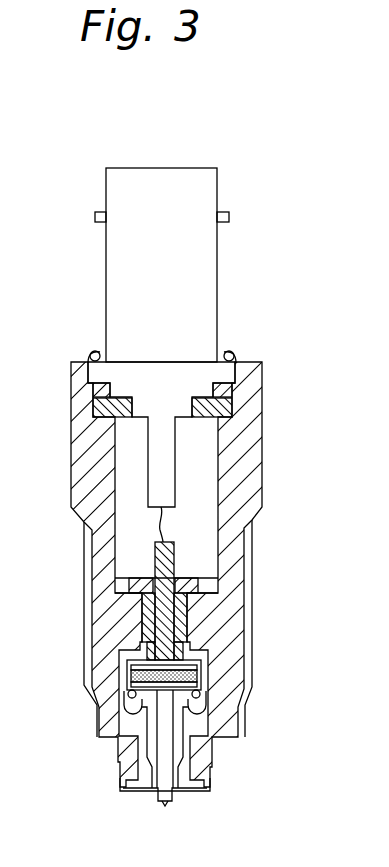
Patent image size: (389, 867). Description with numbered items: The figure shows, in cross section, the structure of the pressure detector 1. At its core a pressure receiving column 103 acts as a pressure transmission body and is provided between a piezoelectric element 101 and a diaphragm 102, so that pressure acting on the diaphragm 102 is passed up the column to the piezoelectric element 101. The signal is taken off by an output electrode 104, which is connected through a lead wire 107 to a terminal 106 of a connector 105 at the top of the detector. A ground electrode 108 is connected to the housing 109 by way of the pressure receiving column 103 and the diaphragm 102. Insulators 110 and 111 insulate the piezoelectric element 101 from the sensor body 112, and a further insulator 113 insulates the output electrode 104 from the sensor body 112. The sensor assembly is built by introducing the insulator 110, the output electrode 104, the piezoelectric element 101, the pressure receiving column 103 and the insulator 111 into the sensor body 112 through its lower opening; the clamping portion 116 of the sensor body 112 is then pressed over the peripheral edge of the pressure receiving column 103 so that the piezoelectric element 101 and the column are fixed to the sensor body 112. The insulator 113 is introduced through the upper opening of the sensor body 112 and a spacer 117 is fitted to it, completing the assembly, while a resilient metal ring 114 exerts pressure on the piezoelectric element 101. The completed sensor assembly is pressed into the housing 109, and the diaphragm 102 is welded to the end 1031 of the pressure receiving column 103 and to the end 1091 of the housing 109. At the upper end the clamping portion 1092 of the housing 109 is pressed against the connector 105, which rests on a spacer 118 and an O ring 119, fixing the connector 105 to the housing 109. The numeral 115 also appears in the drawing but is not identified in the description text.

The pressure detector 1 is at (231, 254).
The piezoelectric element 101 is at (200, 679).
The diaphragm 102 is at (120, 793).
The pressure receiving column 103 is at (190, 768).
The output electrode 104 is at (160, 630).
The connector 105 is at (217, 322).
The terminal 106 is at (157, 450).
The lead wire 107 is at (160, 527).
The ground electrode 108 is at (125, 752).
The housing 109 is at (243, 740).
The insulator 110 is at (135, 665).
The insulator 111 is at (207, 660).
The sensor body 112 is at (208, 607).
The insulator 113 is at (140, 604).
The resilient metal ring 114 is at (200, 695).
The lower electrode 115 is at (130, 690).
The clamping portion 116 is at (122, 716).
The spacer 117 is at (197, 577).
The spacer 118 is at (232, 408).
The O ring 119 is at (232, 390).
The end of the pressure receiving column 1031 is at (165, 805).
The end of the housing 1091 is at (210, 795).
The clamping portion 1092 is at (87, 352).